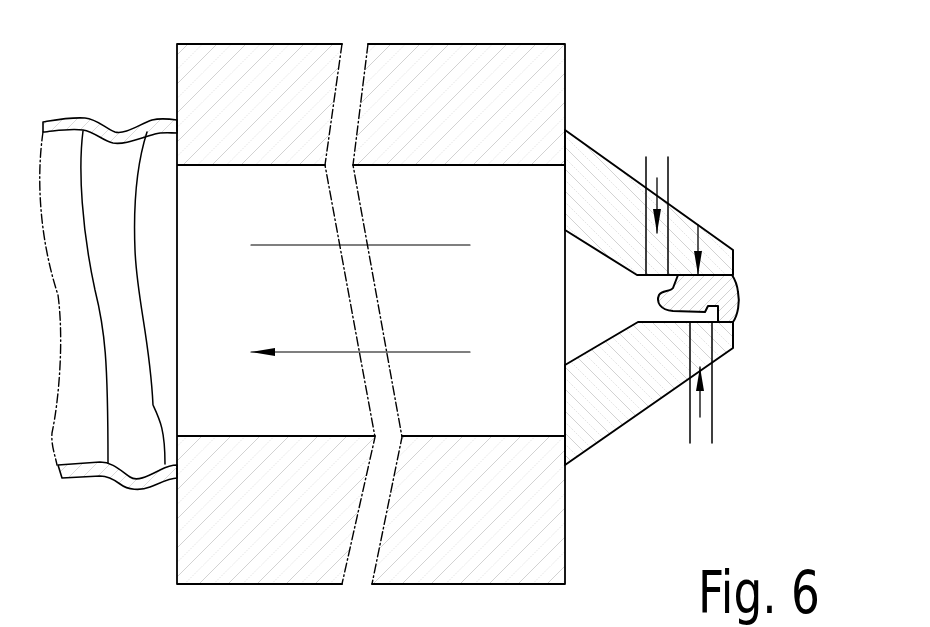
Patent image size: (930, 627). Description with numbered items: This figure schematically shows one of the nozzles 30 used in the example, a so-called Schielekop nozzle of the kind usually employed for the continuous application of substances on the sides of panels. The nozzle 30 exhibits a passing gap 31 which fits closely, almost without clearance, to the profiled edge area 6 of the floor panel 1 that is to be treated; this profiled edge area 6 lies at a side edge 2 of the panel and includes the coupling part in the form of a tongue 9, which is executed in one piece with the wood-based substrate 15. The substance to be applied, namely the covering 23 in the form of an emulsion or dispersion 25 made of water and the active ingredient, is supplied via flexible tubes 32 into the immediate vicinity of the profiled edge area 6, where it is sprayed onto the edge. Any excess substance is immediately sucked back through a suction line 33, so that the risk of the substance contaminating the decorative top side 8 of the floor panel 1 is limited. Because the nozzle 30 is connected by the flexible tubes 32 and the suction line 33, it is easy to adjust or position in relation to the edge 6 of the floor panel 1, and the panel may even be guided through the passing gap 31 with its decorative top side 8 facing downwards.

The floor panel 1 is at (740, 280).
The side edge 2 is at (599, 311).
The profiled edge area 6 is at (651, 298).
The top side 8 is at (676, 277).
The tongue 9 is at (736, 323).
The substrate 15 is at (743, 295).
The covering 23 is at (668, 188).
The emulsion or dispersion 25 is at (657, 178).
The nozzle 30 is at (205, 83).
The passing gap 31 is at (741, 288).
The flexible tube 32 is at (669, 166).
The suction line 33 is at (112, 163).